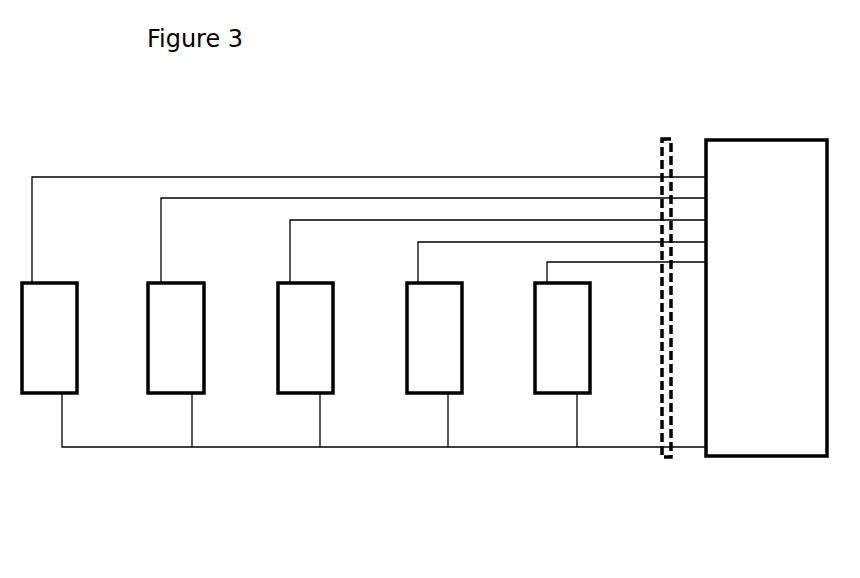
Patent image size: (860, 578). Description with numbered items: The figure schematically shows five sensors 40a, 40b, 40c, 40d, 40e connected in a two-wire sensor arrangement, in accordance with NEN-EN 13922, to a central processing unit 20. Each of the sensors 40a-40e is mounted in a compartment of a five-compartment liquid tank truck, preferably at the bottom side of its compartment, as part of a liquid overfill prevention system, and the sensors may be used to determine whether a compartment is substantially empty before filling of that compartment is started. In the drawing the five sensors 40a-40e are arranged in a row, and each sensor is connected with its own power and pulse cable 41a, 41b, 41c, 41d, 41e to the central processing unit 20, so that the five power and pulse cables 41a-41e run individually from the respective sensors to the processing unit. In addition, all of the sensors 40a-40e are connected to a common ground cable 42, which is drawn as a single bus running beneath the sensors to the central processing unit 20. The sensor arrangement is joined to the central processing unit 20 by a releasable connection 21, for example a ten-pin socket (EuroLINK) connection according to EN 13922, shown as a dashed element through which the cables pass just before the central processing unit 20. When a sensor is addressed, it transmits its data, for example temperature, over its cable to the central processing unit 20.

The central processing unit 20 is at (763, 138).
The releasable connection 21 is at (668, 138).
The sensor 40a is at (49, 338).
The sensor 40b is at (176, 338).
The sensor 40c is at (305, 338).
The sensor 40d is at (434, 338).
The sensor 40e is at (562, 338).
The power and pulse cable 41a is at (160, 175).
The power and pulse cable 41b is at (302, 197).
The power and pulse cable 41c is at (364, 218).
The power and pulse cable 41d is at (450, 240).
The power and pulse cable 41e is at (568, 260).
The ground cable 42 is at (393, 448).